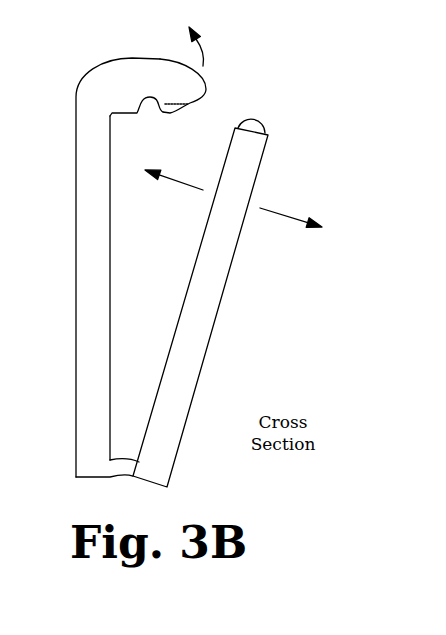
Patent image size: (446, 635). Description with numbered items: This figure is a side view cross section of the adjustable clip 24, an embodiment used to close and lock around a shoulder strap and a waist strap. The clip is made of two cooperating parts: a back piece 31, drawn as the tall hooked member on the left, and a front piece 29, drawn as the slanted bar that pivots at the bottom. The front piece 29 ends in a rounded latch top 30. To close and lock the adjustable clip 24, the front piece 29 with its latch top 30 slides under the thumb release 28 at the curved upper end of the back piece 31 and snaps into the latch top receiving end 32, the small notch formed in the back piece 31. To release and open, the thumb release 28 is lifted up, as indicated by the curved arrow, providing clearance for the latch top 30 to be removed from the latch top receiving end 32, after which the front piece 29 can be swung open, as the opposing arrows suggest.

The adjustable clip 24 is at (318, 302).
The thumb release 28 is at (202, 78).
The front piece 29 is at (205, 360).
The latch top 30 is at (263, 122).
The back piece 31 is at (75, 362).
The latch top receiving end 32 is at (139, 105).